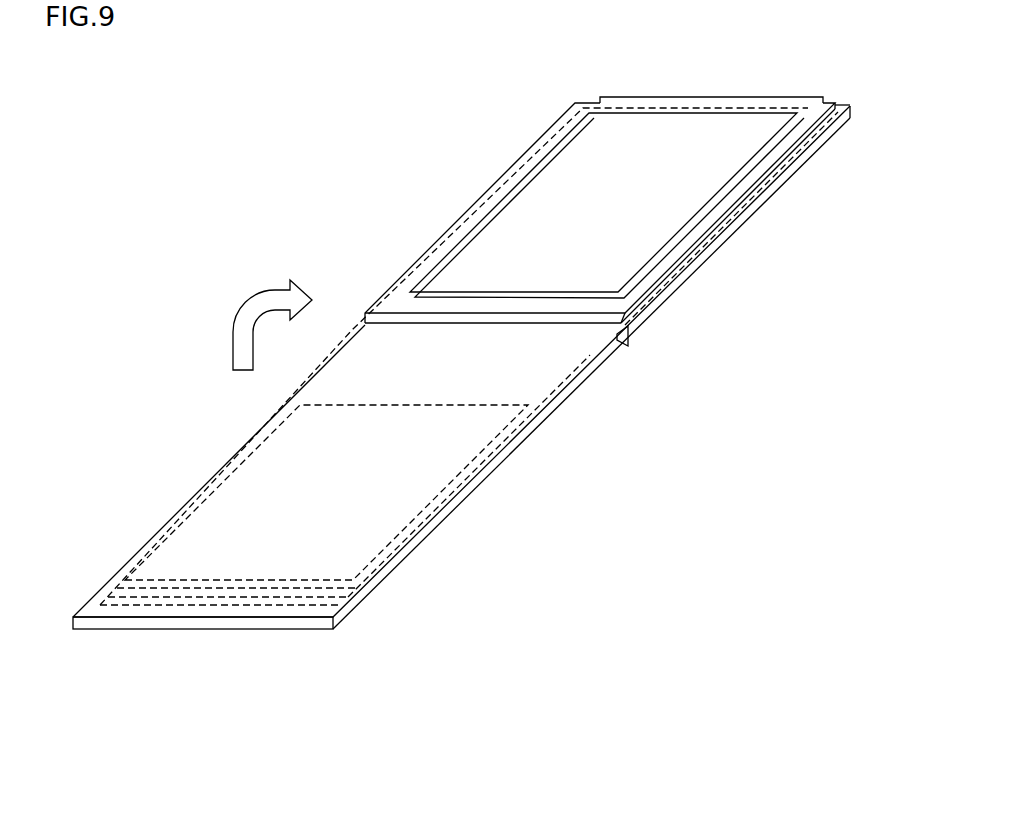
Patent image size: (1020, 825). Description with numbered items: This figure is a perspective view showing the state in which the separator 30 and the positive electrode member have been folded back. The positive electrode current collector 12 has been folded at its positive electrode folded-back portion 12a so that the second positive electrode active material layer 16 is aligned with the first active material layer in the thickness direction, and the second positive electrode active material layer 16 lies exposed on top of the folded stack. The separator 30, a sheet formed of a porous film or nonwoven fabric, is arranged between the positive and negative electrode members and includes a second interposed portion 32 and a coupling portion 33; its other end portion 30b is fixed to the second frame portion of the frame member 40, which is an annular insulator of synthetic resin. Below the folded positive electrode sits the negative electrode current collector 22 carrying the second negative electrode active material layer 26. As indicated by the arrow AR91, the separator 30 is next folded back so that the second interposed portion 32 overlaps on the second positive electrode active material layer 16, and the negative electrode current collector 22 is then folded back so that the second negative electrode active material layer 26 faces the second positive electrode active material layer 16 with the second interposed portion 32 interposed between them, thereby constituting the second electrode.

The positive electrode current collector 12 is at (399, 308).
The positive electrode folded-back portion 12a is at (685, 97).
The second positive electrode active material layer 16 is at (667, 215).
The negative electrode current collector 22 is at (328, 627).
The second negative electrode active material layer 26 is at (328, 571).
The separator 30 is at (279, 630).
The other end portion of separator 30b is at (233, 609).
The second interposed portion 32 is at (375, 513).
The coupling portion 33 is at (692, 262).
The frame member 40 is at (796, 163).
The arrow AR91 is at (252, 306).